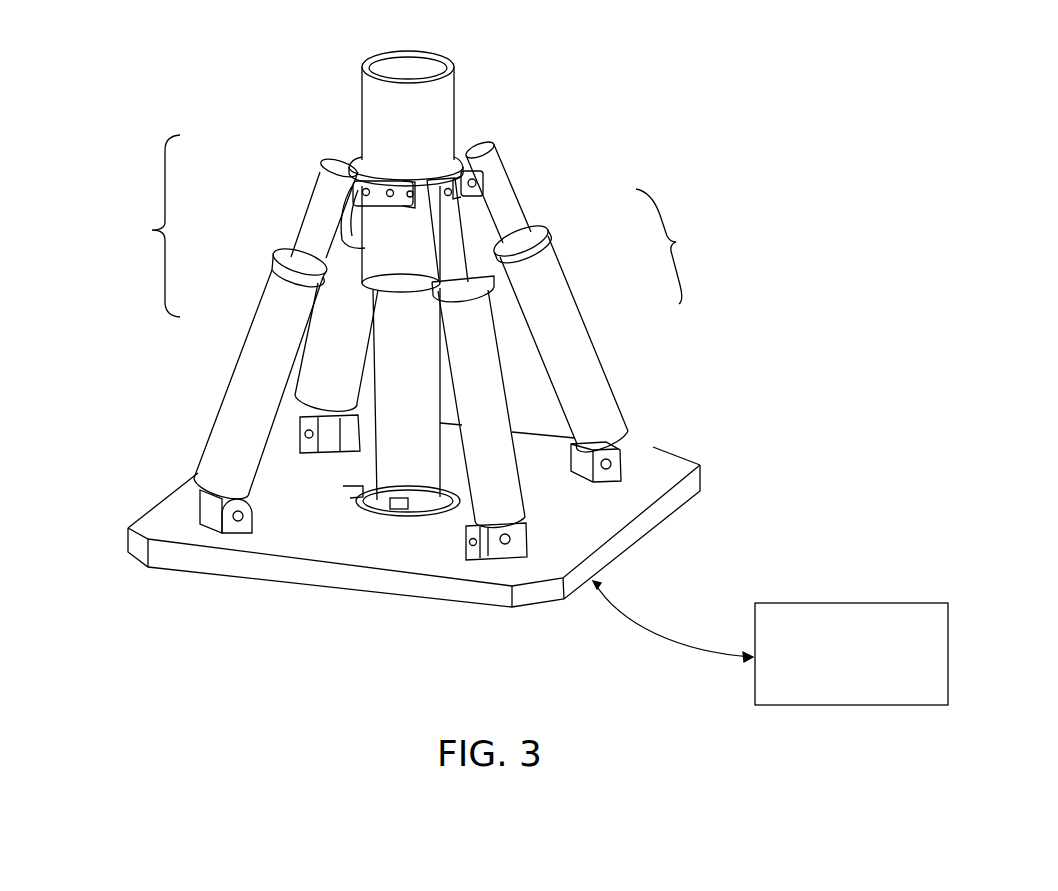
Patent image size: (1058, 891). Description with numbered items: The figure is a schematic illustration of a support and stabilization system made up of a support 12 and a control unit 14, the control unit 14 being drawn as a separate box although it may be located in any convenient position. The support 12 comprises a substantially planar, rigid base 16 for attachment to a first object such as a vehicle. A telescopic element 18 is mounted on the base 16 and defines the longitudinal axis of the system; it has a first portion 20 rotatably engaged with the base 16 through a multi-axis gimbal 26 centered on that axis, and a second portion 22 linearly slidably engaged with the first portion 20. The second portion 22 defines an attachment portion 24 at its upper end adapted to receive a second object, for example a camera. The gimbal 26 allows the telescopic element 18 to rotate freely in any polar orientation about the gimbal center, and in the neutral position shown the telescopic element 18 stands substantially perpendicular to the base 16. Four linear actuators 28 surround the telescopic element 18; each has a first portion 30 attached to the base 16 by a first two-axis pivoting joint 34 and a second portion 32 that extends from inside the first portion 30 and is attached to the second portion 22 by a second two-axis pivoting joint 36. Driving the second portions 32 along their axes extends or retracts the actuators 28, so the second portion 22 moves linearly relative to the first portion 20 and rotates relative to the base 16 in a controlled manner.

The support and stabilization system 12 is at (110, 606).
The control unit 14 is at (890, 618).
The base 16 is at (165, 525).
The telescopic element 18 is at (152, 230).
The first portion 20 is at (397, 398).
The second portion 22 is at (392, 250).
The attachment portion 24 is at (428, 68).
The multi-axis gimbal 26 is at (350, 496).
The linear actuator 28 is at (676, 242).
The first portion 30 is at (568, 314).
The second portion 32 is at (508, 207).
The first two-axis pivoting joint 34 is at (623, 455).
The second two-axis pivoting joint 36 is at (484, 182).